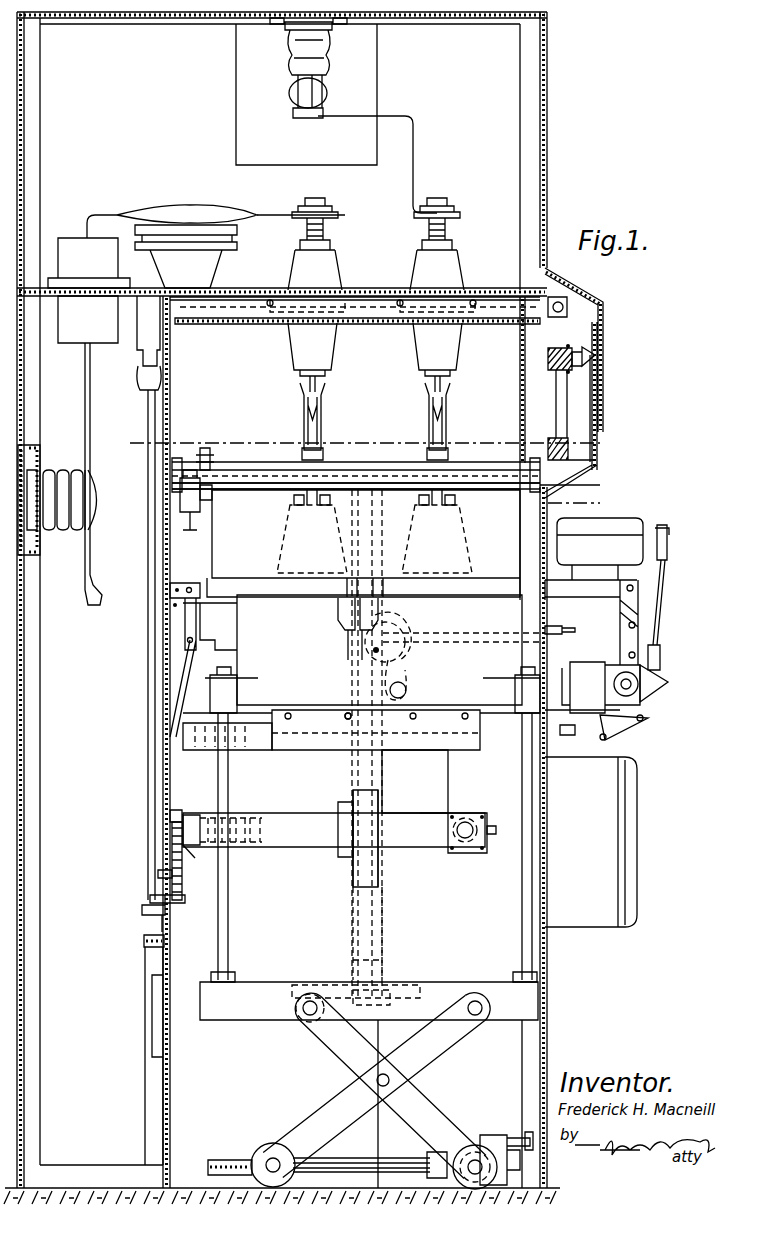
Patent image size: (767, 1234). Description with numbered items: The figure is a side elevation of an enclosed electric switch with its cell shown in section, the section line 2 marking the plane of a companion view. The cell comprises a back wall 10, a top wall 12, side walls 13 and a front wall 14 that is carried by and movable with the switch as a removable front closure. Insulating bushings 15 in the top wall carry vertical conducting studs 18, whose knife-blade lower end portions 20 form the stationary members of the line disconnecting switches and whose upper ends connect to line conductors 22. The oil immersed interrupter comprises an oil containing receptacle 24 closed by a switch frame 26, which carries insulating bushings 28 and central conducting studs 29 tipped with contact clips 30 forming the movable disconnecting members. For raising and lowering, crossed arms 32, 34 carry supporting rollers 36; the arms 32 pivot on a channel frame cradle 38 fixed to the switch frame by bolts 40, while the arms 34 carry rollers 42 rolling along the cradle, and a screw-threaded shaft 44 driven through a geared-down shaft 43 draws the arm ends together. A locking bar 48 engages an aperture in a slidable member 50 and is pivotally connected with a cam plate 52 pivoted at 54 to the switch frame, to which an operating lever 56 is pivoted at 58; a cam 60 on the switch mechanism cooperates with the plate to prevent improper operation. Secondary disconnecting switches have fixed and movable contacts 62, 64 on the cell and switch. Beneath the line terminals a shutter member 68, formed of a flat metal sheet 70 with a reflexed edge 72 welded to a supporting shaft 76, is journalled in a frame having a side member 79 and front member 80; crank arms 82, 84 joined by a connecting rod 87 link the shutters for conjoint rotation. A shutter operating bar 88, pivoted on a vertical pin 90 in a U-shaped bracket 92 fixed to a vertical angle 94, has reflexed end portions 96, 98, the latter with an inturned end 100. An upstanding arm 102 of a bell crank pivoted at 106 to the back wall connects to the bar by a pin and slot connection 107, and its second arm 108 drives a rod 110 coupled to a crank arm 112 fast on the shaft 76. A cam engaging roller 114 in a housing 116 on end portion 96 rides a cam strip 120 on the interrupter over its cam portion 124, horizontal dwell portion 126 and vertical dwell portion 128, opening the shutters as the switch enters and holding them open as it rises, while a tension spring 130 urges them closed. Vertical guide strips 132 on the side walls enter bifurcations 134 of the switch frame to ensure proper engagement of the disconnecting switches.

The section line 2 is at (361, 475).
The back wall 10 is at (160, 662).
The top wall 12 is at (476, 298).
The side walls 13 is at (182, 948).
The front wall 14 is at (548, 798).
The insulating bushings 15 is at (414, 340).
The conducting studs 18 is at (427, 233).
The lower extended end portions 20 is at (432, 383).
The line conductors 22 is at (435, 178).
The oil containing receptacle 24 is at (334, 935).
The switch frame 26 is at (352, 650).
The insulating bushings 28 is at (472, 540).
The central conducting studs 29 is at (430, 500).
The contact clips 30 is at (425, 392).
The crossed arms 32 is at (433, 1046).
The crossed arms 34 is at (332, 1048).
The switch supporting rollers 36 is at (472, 1145).
The channel frame cradle 38 is at (233, 1012).
The bolts 40 is at (522, 930).
The rollers 42 is at (312, 1000).
The shaft 43 is at (510, 1135).
The shaft 44 is at (390, 1158).
The locking bar 48 is at (385, 910).
The member 50 is at (332, 980).
The cam plate 52 is at (415, 632).
The pivot 54 is at (400, 646).
The operating lever 56 is at (478, 640).
The pivot 58 is at (390, 625).
The cam 60 is at (412, 666).
The fixed contact members 62 is at (573, 348).
The movable contact members 64 is at (562, 370).
The shutter member 68 is at (363, 543).
The flat rectangular metal sheet 70 is at (505, 558).
The angularly-related edge 72 is at (470, 470).
The supporting shaft 76 is at (570, 492).
The horizontal longitudinal side member 79 is at (352, 462).
The transverse horizontal front member 80 is at (230, 462).
The crank arm 82 is at (513, 476).
The crank arm 84 is at (213, 503).
The connecting rod 87 is at (180, 504).
The shutter operating bar 88 is at (282, 822).
The vertical pivot pin 90 is at (340, 840).
The U-shaped bracket 92 is at (348, 870).
The vertical angle 94 is at (365, 815).
The reflexed end portion 96 is at (428, 822).
The reflexed end portion 98 is at (240, 820).
The inturned end 100 is at (195, 815).
The upstanding arm 102 is at (172, 846).
The pivot pin 106 is at (158, 875).
The pin and slot connection 107 is at (198, 855).
The second arm 108 is at (152, 898).
The vertically extended rod 110 is at (165, 758).
The crank arm 112 is at (185, 518).
The cam engaging roller 114 is at (465, 818).
The housing 116 is at (490, 830).
The cam strip 120 is at (318, 710).
The roller engaging cam portion 124 is at (183, 737).
The horizontal dwell portion 126 is at (322, 740).
The vertical dwell portion 128 is at (456, 765).
The tension spring 130 is at (170, 818).
The vertical guide strips 132 is at (358, 548).
The bifurcations 134 is at (340, 607).